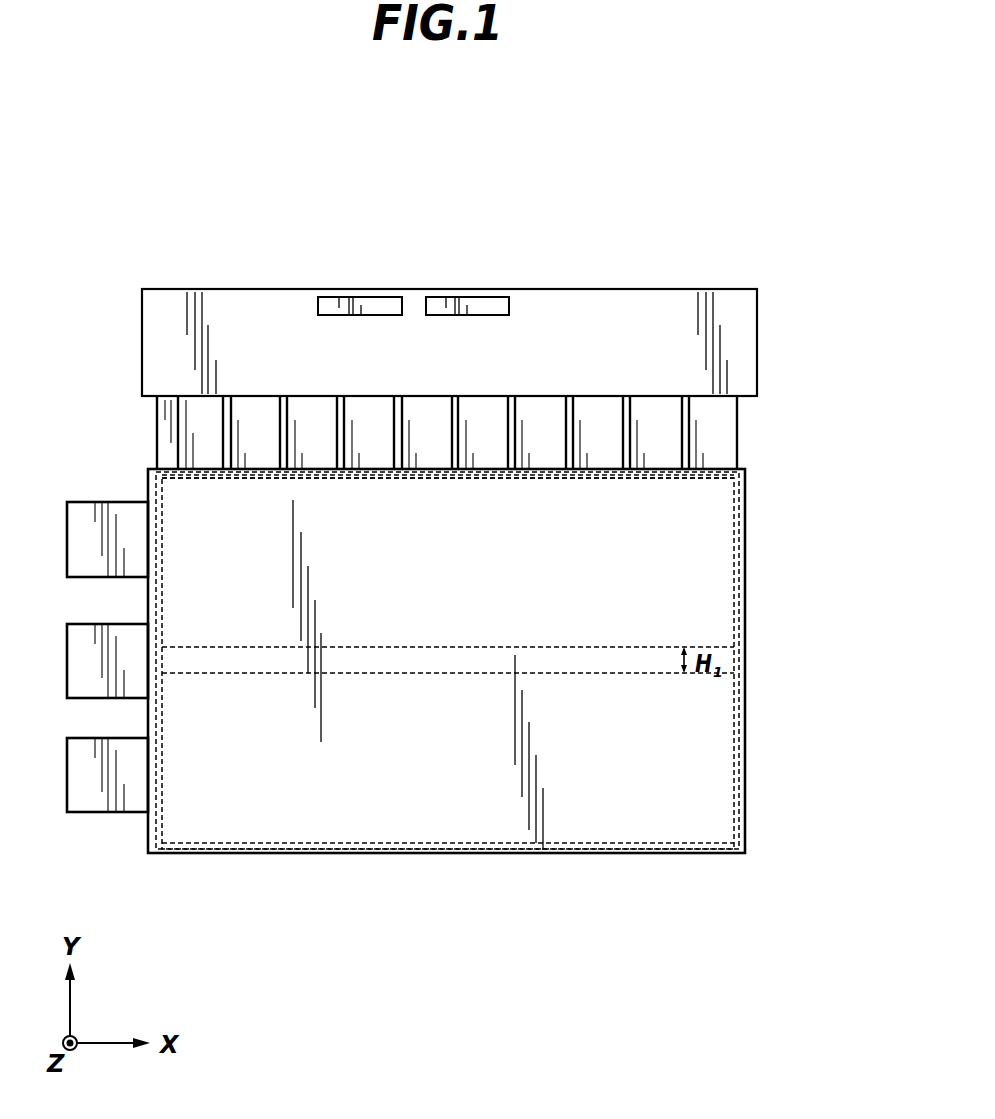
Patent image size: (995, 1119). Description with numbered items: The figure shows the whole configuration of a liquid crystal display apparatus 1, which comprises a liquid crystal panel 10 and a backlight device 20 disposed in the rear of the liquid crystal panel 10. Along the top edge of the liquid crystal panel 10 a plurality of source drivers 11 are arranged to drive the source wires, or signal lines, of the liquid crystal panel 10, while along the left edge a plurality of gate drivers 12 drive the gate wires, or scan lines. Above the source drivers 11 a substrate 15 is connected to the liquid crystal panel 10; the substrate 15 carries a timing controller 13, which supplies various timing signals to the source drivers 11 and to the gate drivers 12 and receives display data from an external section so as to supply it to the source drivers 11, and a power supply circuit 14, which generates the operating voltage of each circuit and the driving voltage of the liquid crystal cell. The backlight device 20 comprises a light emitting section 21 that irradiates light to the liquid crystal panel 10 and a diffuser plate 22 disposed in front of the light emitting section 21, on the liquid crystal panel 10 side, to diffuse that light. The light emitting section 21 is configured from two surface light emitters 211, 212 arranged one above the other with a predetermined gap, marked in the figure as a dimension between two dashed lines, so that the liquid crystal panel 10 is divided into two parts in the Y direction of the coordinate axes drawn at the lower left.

The liquid crystal display apparatus 1 is at (477, 231).
The liquid crystal panel 10 is at (748, 494).
The source drivers 11 is at (417, 405).
The gate drivers 12 is at (67, 737).
The timing controller 13 is at (378, 302).
The power supply circuit 14 is at (485, 302).
The substrate 15 is at (197, 289).
The backlight device 20 is at (515, 663).
The light emitting section 21 is at (497, 663).
The diffuser plate 22 is at (738, 552).
The surface light emitter 211 is at (735, 613).
The surface light emitter 212 is at (479, 699).